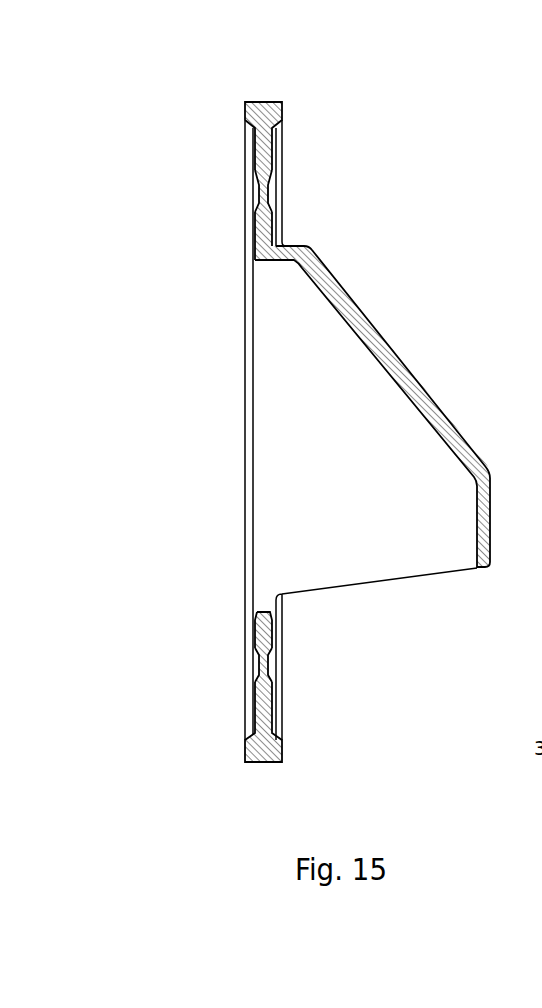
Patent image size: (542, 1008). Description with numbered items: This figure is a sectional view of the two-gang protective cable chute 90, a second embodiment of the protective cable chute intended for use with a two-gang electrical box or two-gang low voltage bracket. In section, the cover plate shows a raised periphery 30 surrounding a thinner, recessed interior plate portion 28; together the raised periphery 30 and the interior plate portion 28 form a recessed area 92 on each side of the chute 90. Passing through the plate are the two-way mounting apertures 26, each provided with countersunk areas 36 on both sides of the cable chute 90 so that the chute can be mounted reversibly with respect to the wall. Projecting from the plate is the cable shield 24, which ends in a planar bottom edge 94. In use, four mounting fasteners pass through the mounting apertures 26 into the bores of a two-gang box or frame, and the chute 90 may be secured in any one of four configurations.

The cable shield 24 is at (397, 362).
The two-way mounting apertures 26 is at (263, 199).
The recessed interior plate portion 28 is at (265, 168).
The raised periphery 30 is at (283, 107).
The countersunk areas 36 is at (345, 223).
The 2-gang protective cable chute 90 is at (186, 364).
The recessed area 92 is at (250, 150).
The planar bottom edge 94 is at (360, 583).